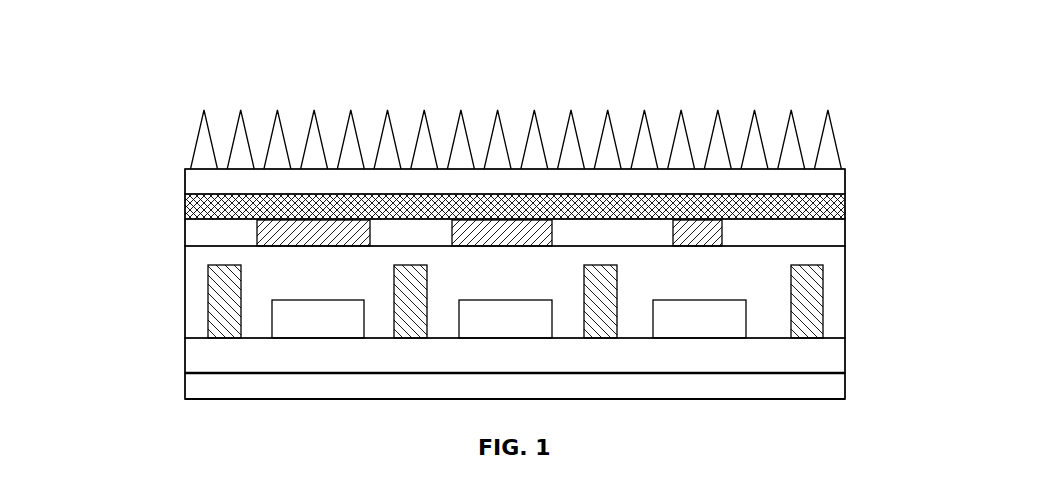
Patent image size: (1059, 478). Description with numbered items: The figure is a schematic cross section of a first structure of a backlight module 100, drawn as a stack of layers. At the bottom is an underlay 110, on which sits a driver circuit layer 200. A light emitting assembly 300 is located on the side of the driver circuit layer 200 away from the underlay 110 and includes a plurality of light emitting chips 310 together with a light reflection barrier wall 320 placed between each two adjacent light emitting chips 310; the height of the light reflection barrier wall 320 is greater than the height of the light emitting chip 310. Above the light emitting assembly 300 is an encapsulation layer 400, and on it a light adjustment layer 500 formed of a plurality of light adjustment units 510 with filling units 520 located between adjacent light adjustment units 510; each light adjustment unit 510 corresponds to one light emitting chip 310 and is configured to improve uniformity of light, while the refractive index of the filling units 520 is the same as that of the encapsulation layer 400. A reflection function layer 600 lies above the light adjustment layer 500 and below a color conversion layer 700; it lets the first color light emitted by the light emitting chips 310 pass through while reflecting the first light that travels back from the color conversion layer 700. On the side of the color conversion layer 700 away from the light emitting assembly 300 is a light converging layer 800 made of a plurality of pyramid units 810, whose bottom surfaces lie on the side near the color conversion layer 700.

The backlight module 100 is at (128, 41).
The underlay 110 is at (185, 388).
The driver circuit layer 200 is at (185, 358).
The light emitting assembly 300 is at (923, 262).
The light emitting chip 310 is at (746, 330).
The light reflection barrier wall 320 is at (823, 285).
The encapsulation layer 400 is at (185, 292).
The light adjustment layer 500 is at (356, 35).
The light adjustment unit 510 is at (873, 224).
The filling unit 520 is at (145, 226).
The reflection function layer 600 is at (185, 207).
The color conversion layer 700 is at (185, 180).
The light converging layer 800 is at (539, 35).
The pyramid unit 810 is at (170, 128).